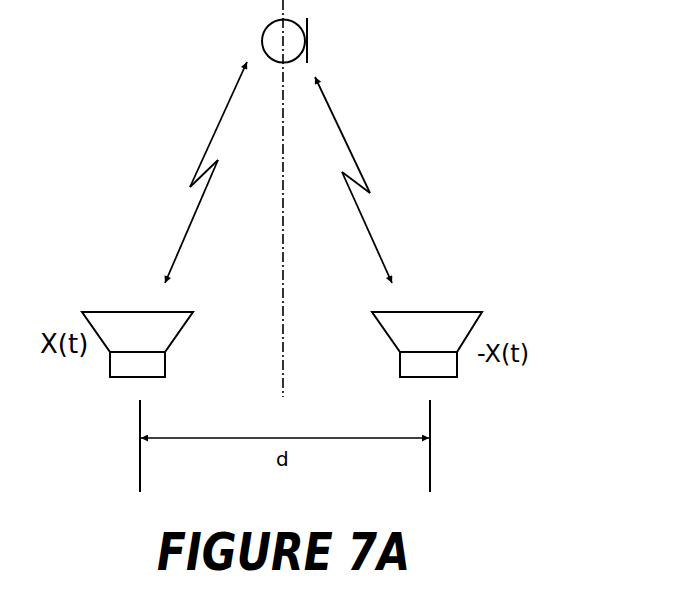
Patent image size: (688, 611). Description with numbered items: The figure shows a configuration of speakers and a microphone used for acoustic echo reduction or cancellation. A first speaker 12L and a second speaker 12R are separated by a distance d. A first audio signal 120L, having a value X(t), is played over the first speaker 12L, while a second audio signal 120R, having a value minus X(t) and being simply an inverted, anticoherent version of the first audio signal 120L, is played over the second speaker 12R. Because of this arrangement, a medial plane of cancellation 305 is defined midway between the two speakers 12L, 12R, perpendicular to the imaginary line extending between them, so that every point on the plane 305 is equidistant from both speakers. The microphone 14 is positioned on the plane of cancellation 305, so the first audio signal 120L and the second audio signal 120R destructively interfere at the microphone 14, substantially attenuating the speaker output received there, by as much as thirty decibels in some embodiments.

The microphone 14 is at (307, 38).
The first speaker 12L is at (102, 312).
The second speaker 12R is at (448, 310).
The first audio signal 120L is at (210, 137).
The second audio signal 120R is at (350, 152).
The medial plane of cancellation 305 is at (285, 313).